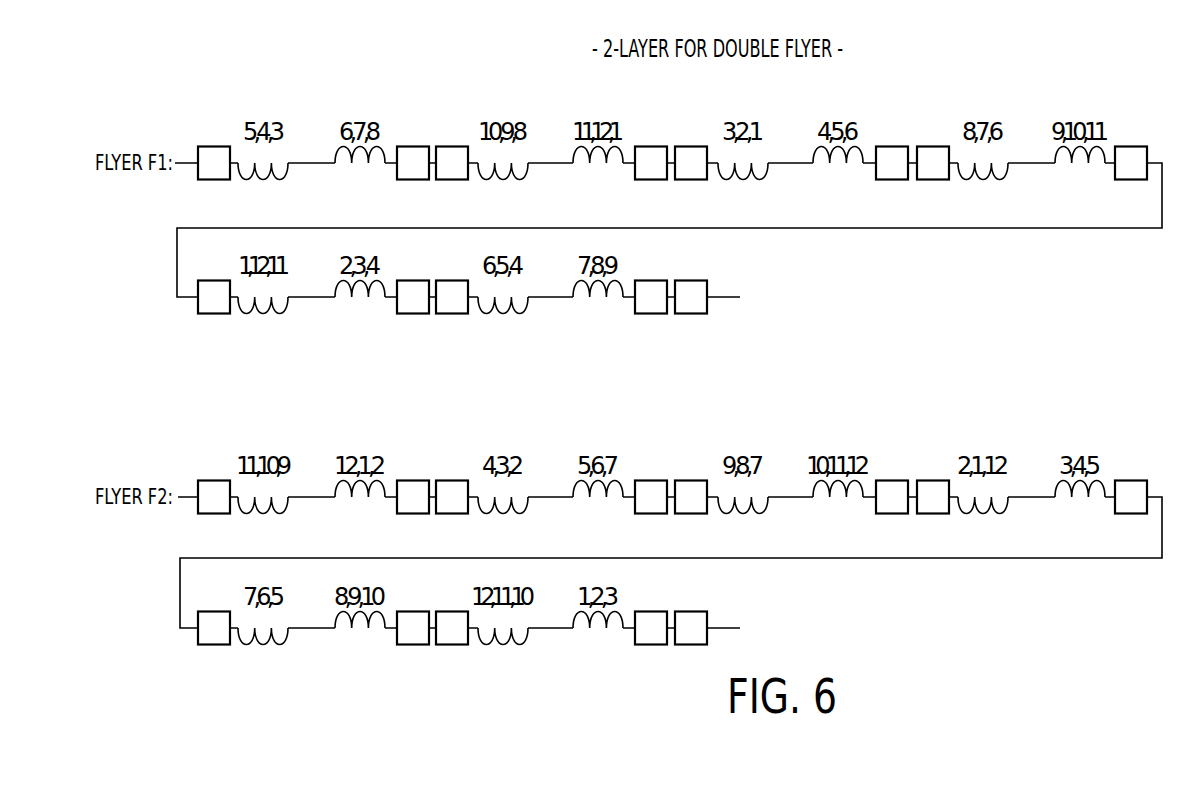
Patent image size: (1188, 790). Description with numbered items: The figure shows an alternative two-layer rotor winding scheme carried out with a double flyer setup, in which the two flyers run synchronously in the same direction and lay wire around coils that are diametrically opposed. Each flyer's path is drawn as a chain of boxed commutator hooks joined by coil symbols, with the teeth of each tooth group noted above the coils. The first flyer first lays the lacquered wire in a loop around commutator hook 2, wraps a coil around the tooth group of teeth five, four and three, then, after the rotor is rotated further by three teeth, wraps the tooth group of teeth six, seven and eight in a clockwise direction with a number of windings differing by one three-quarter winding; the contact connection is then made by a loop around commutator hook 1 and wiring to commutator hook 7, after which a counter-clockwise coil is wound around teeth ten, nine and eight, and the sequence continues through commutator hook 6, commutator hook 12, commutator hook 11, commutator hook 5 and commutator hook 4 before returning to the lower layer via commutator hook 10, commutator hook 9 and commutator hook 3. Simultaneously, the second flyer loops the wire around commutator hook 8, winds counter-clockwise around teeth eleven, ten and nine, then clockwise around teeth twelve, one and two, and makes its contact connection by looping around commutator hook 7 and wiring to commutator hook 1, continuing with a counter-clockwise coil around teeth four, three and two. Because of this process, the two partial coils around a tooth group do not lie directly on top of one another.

The commutator hook 1 is at (432, 330).
The commutator hook 2 is at (452, 396).
The commutator hook 3 is at (432, 463).
The commutator hook 4 is at (672, 396).
The commutator hook 5 is at (912, 330).
The commutator hook 6 is at (671, 330).
The commutator hook 7 is at (432, 330).
The commutator hook 8 is at (452, 463).
The commutator hook 9 is at (432, 463).
The commutator hook 10 is at (672, 397).
The commutator hook 11 is at (912, 330).
The commutator hook 12 is at (671, 330).